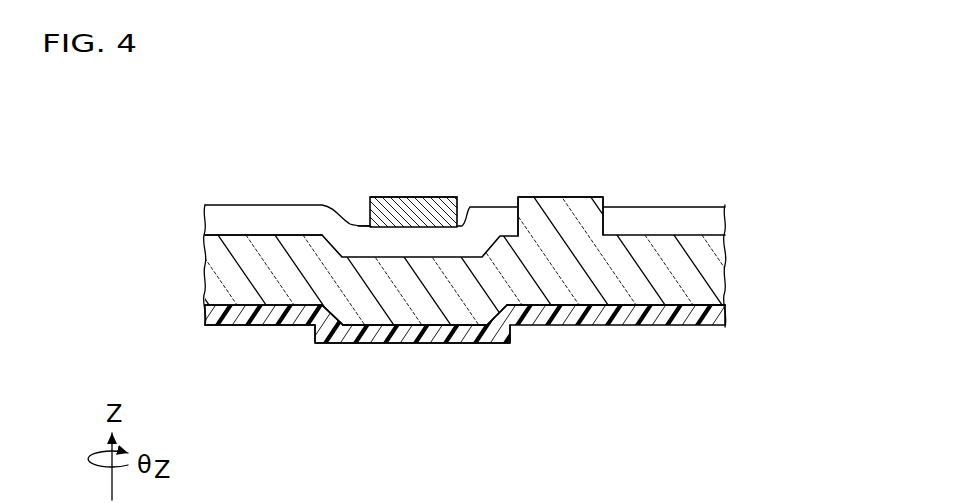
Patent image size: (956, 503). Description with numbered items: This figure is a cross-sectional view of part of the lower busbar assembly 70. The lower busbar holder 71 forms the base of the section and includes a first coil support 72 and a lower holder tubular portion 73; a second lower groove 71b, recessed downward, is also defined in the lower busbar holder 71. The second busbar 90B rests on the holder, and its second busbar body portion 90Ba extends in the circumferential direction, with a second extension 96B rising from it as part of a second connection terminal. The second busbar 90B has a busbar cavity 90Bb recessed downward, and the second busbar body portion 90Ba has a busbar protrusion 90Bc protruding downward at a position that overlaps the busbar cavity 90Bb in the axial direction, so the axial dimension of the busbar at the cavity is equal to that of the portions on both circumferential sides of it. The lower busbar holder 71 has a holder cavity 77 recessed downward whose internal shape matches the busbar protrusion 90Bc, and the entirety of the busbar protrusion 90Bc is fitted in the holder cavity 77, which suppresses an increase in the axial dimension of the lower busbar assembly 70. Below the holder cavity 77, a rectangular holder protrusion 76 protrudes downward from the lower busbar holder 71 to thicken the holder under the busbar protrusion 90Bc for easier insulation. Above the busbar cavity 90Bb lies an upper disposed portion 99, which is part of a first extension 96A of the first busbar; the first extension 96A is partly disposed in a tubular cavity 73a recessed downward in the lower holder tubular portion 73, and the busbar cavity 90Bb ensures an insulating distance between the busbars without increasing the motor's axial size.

The lower busbar assembly 70 is at (713, 146).
The lower busbar holder 71 is at (710, 328).
The second lower groove 71b is at (722, 290).
The first coil support 72 is at (215, 327).
The lower holder tubular portion 73 is at (245, 215).
The tubular cavity 73a is at (363, 224).
The holder protrusion 76 is at (328, 335).
The holder cavity 77 is at (333, 318).
The second busbar 90B is at (731, 237).
The second busbar body portion 90Ba is at (597, 293).
The busbar cavity 90Bb is at (323, 235).
The busbar protrusion 90Bc is at (457, 323).
The first extension 96A is at (415, 197).
The second extension 96B is at (562, 205).
The upper disposed portion 99 is at (441, 196).